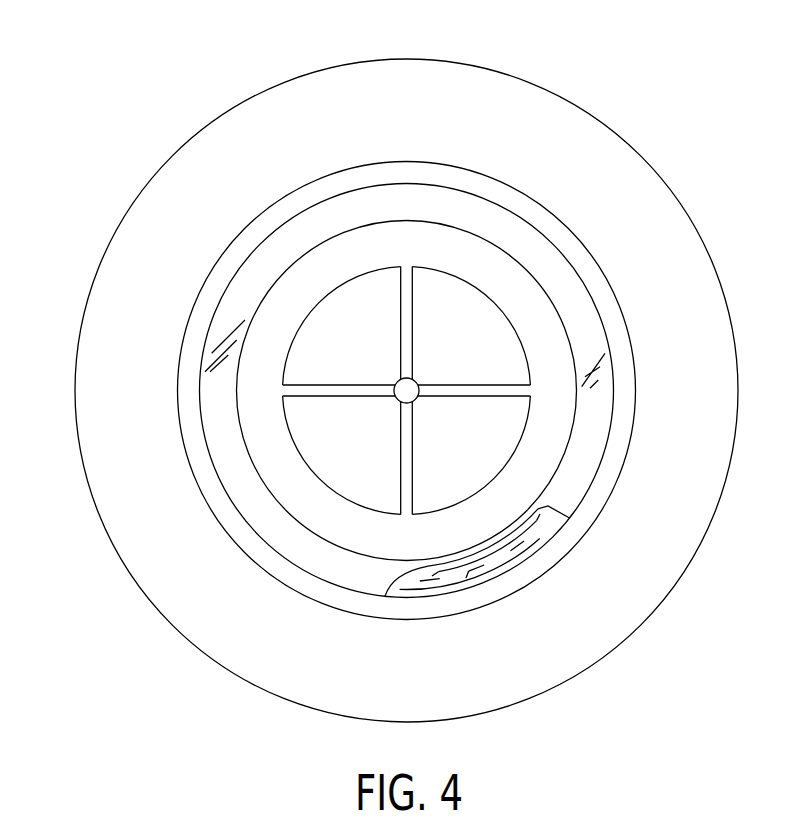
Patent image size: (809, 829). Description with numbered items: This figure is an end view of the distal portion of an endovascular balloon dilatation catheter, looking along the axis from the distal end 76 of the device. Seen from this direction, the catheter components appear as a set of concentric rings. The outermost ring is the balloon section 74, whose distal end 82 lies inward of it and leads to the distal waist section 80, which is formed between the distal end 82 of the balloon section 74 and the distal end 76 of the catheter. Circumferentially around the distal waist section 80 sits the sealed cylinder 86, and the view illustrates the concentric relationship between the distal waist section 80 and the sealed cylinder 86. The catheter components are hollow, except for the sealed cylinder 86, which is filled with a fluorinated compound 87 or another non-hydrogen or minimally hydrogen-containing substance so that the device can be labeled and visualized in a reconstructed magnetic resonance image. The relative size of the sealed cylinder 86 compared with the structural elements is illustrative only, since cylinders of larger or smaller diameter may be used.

The balloon section 74 is at (210, 120).
The distal end of the balloon section 82 is at (537, 135).
The sealed cylinder 86 is at (537, 258).
The distal waist section 80 is at (267, 437).
The distal end 76 is at (415, 402).
The fluorinated compound 87 is at (477, 570).